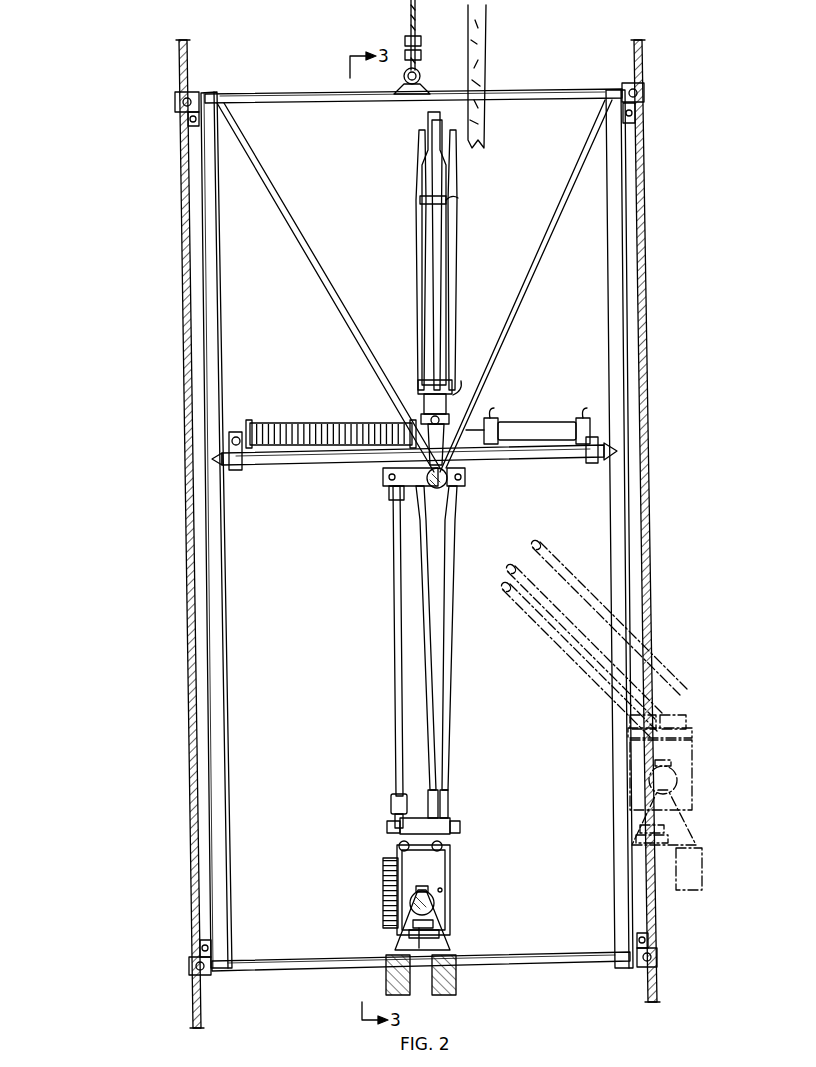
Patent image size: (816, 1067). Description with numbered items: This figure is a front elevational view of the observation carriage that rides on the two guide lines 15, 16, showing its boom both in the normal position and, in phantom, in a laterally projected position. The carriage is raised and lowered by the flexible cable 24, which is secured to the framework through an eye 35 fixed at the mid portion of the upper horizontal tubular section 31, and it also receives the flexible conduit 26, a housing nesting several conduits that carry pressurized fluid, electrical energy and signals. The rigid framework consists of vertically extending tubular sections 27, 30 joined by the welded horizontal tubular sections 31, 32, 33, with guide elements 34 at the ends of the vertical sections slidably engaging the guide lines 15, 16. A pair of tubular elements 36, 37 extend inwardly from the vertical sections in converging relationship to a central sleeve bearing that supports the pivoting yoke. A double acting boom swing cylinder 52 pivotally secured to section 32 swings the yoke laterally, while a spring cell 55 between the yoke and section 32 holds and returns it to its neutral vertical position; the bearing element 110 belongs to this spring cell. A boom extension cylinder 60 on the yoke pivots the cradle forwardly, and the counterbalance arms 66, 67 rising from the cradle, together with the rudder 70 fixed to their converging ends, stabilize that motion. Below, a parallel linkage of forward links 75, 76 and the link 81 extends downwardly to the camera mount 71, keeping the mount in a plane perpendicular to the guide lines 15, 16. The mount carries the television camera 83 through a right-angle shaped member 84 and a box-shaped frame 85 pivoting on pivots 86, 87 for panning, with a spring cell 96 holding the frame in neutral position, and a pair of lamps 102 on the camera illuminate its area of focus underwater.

The guide line 15 is at (186, 484).
The guide line 16 is at (643, 456).
The flexible cable 24 is at (409, 18).
The flexible conduit 26 is at (486, 30).
The vertically extending tubular section 27 is at (222, 532).
The vertically extending tubular section 30 is at (605, 530).
The horizontal tubular section 31 is at (519, 92).
The horizontal tubular section 32 is at (328, 460).
The horizontal tubular section 33 is at (242, 958).
The guide element 34 is at (645, 92).
The eye 35 is at (421, 76).
The tubular element 36 is at (304, 232).
The tubular element 37 is at (538, 222).
The boom swing cylinder 52 is at (520, 422).
The spring cell 55 is at (320, 410).
The boom extension cylinder 60 is at (440, 250).
The counterbalance arm 66 is at (414, 290).
The counterbalance arm 67 is at (450, 290).
The rudder 70 is at (427, 124).
The camera mount 71 is at (428, 817).
The forward link 75 is at (424, 666).
The forward link 76 is at (451, 665).
The link 81 is at (392, 602).
The television camera 83 is at (435, 905).
The right-angle shaped member 84 is at (452, 858).
The box-shaped frame 85 is at (441, 890).
The pivot 86 is at (391, 804).
The pivot 87 is at (432, 920).
The spring cell 96 is at (383, 872).
The lamp 102 is at (457, 990).
The bearing element 110 is at (426, 396).